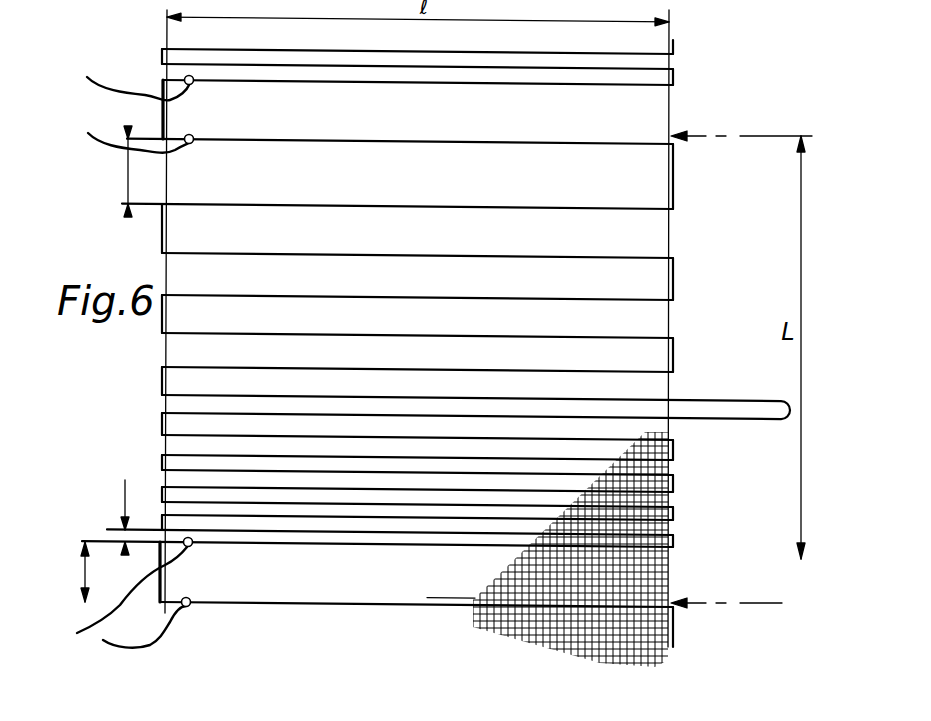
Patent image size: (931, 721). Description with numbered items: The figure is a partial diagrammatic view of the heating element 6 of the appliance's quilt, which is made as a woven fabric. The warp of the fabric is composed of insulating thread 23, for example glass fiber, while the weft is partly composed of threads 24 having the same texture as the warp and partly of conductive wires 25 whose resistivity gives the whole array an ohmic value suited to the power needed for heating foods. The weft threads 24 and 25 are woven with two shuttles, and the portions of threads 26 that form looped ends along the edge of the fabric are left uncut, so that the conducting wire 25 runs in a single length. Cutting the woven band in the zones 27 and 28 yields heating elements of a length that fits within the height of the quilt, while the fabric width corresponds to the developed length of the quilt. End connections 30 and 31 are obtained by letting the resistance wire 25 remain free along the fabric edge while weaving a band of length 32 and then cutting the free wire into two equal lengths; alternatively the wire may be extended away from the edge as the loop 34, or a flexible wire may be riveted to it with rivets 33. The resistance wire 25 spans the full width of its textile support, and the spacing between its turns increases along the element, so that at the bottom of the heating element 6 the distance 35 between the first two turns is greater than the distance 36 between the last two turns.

The heating element 6 is at (651, 229).
The insulating thread 23 is at (652, 648).
The threads 24 is at (437, 598).
The conductive wires 25 is at (442, 545).
The looped ends of threads 26 is at (674, 282).
The cutting zone 27 is at (707, 137).
The cutting zone 28 is at (673, 96).
The end connection 30 is at (112, 90).
The end connection 31 is at (104, 148).
The length of fabric band 32 is at (85, 568).
The rivets 33 is at (192, 144).
The loop 34 is at (727, 415).
The distance between first two turns 35 is at (123, 529).
The distance between last two turns 36 is at (130, 172).